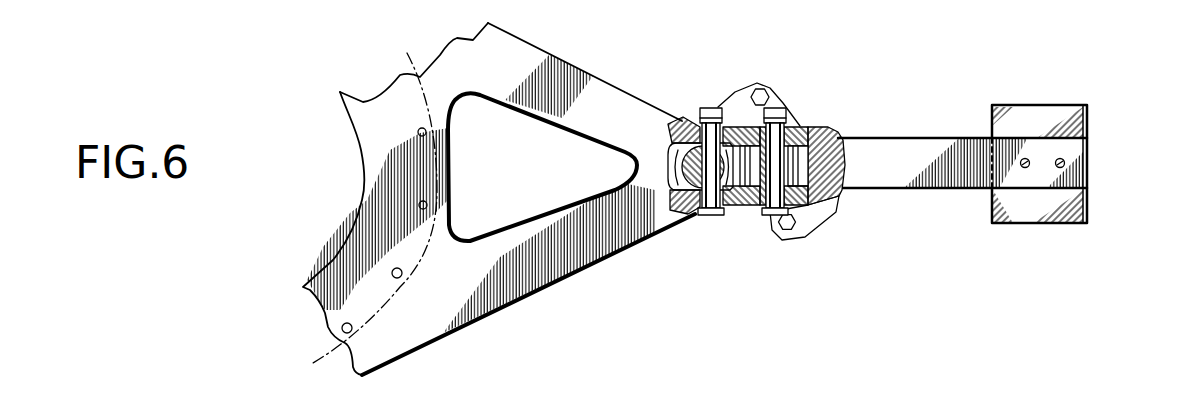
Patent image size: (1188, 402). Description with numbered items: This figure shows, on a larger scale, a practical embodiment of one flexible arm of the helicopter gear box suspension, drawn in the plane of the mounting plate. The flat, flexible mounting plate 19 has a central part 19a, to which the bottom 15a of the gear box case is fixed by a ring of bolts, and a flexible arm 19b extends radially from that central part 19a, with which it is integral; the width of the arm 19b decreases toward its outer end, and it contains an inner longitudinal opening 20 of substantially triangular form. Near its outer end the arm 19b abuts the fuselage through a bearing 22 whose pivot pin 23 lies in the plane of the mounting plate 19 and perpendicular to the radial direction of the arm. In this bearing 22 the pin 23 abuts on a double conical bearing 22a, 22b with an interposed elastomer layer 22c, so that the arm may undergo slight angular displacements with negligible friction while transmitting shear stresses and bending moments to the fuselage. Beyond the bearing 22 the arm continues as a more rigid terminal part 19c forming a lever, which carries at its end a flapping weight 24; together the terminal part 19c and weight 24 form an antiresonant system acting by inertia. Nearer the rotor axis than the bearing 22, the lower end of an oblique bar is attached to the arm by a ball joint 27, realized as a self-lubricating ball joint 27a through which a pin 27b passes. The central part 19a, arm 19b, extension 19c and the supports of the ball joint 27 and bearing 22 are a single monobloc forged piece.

The bottom of the case of the gear box 15a is at (409, 60).
The flexible mounting plate 19 is at (589, 62).
The central part of the mounting plate 19a is at (338, 262).
The flexible arm 19b is at (568, 255).
The rigid terminal part 19c is at (877, 147).
The inner longitudinal opening 20 is at (500, 117).
The bearing 22 is at (843, 220).
The conical bearing 22a is at (760, 208).
The conical bearing 22b is at (772, 135).
The elastomer layer 22c is at (752, 112).
The pivot pin 23 is at (772, 212).
The flapping weight 24 is at (1029, 112).
The ball joint 27 is at (705, 216).
The self-lubricating ball joint 27a is at (682, 172).
The pin 27b is at (706, 160).